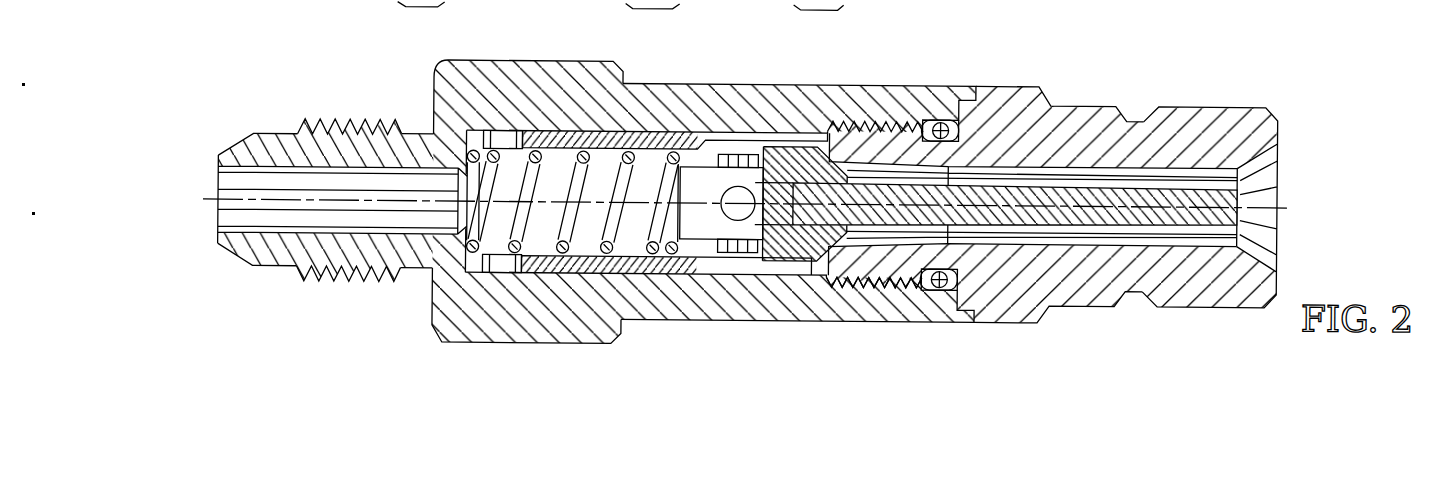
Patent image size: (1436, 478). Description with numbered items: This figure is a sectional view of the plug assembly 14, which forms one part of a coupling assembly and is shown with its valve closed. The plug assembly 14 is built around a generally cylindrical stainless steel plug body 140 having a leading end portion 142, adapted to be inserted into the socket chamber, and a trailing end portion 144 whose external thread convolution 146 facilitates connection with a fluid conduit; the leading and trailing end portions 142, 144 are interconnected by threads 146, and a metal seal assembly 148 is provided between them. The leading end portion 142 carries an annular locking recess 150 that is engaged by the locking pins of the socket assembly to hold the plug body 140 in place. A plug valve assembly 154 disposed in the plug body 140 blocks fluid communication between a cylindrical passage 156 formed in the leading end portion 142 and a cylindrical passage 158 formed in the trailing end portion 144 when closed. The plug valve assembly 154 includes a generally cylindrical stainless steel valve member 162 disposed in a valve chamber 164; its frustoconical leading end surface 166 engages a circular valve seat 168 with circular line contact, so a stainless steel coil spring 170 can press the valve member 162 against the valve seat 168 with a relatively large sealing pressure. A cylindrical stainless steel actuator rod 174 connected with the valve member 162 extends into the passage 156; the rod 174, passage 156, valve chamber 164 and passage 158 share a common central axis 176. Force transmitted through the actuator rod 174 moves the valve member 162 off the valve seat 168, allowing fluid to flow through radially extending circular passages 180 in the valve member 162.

The plug assembly 14 is at (1330, 105).
The plug body 140 is at (1260, 84).
The leading end portion 142 is at (1008, 73).
The trailing end portion 144 is at (428, 75).
The external thread convolution 146 is at (346, 117).
The metal seal assembly 148 is at (942, 105).
The annular locking recess 150 is at (1140, 102).
The plug valve assembly 154 is at (790, 116).
The cylindrical passage 156 is at (1083, 232).
The cylindrical passage 158 is at (266, 228).
The valve member 162 is at (650, 124).
The valve chamber 164 is at (508, 137).
The frustoconical leading end surface 166 is at (823, 252).
The valve seat 168 is at (864, 276).
The coil spring 170 is at (507, 251).
The actuator rod 174 is at (1185, 210).
The central axis 176 is at (1283, 199).
The radially extending circular passages 180 is at (742, 150).